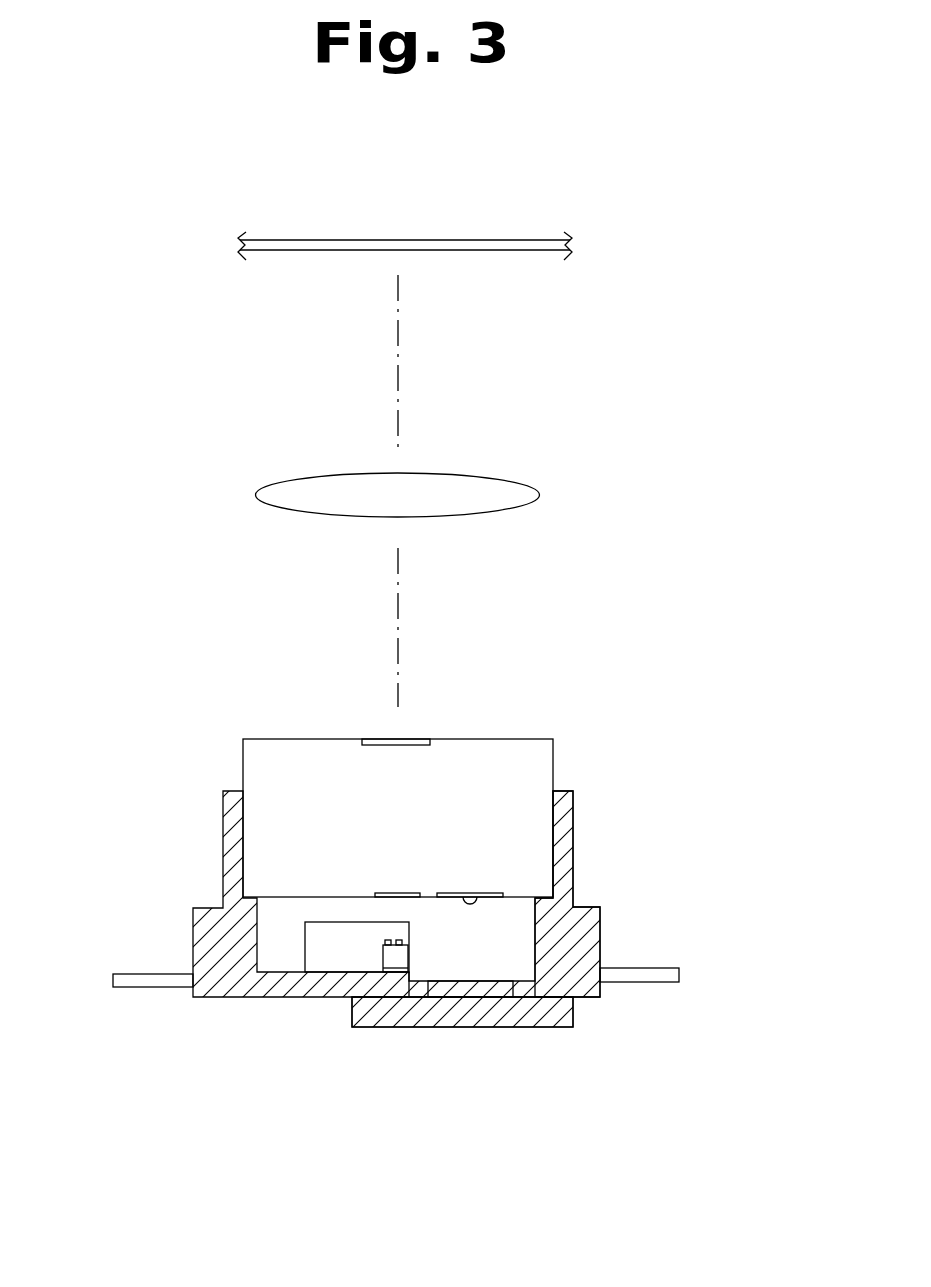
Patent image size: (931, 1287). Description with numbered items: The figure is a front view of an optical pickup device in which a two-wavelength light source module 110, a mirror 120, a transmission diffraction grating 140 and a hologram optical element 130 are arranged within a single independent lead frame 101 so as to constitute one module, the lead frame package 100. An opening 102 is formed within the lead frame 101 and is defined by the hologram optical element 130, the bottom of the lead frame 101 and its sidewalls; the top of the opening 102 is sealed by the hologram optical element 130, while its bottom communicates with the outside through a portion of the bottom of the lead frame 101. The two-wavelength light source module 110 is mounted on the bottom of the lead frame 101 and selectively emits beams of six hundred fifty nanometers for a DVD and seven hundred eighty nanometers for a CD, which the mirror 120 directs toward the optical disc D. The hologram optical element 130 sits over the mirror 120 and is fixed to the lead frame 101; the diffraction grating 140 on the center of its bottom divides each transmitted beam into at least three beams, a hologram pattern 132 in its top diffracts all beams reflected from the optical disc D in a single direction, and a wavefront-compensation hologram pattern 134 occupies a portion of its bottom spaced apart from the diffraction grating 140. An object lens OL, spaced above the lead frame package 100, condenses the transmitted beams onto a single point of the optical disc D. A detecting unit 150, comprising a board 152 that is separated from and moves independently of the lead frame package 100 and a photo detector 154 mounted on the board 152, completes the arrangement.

The lead frame package 100 is at (577, 888).
The lead frame 101 is at (562, 848).
The opening 102 is at (511, 938).
The two-wavelength light source module 110 is at (393, 960).
The mirror 120 is at (340, 947).
The hologram optical element 130 is at (263, 770).
The hologram pattern 132 is at (393, 740).
The wavefront-compensation hologram pattern 134 is at (478, 895).
The transmission diffraction grating 140 is at (440, 897).
The detecting unit 150 is at (778, 912).
The board 152 is at (515, 1012).
The photo detector 154 is at (497, 993).
The optical disc D is at (485, 247).
The object lens OL is at (462, 492).